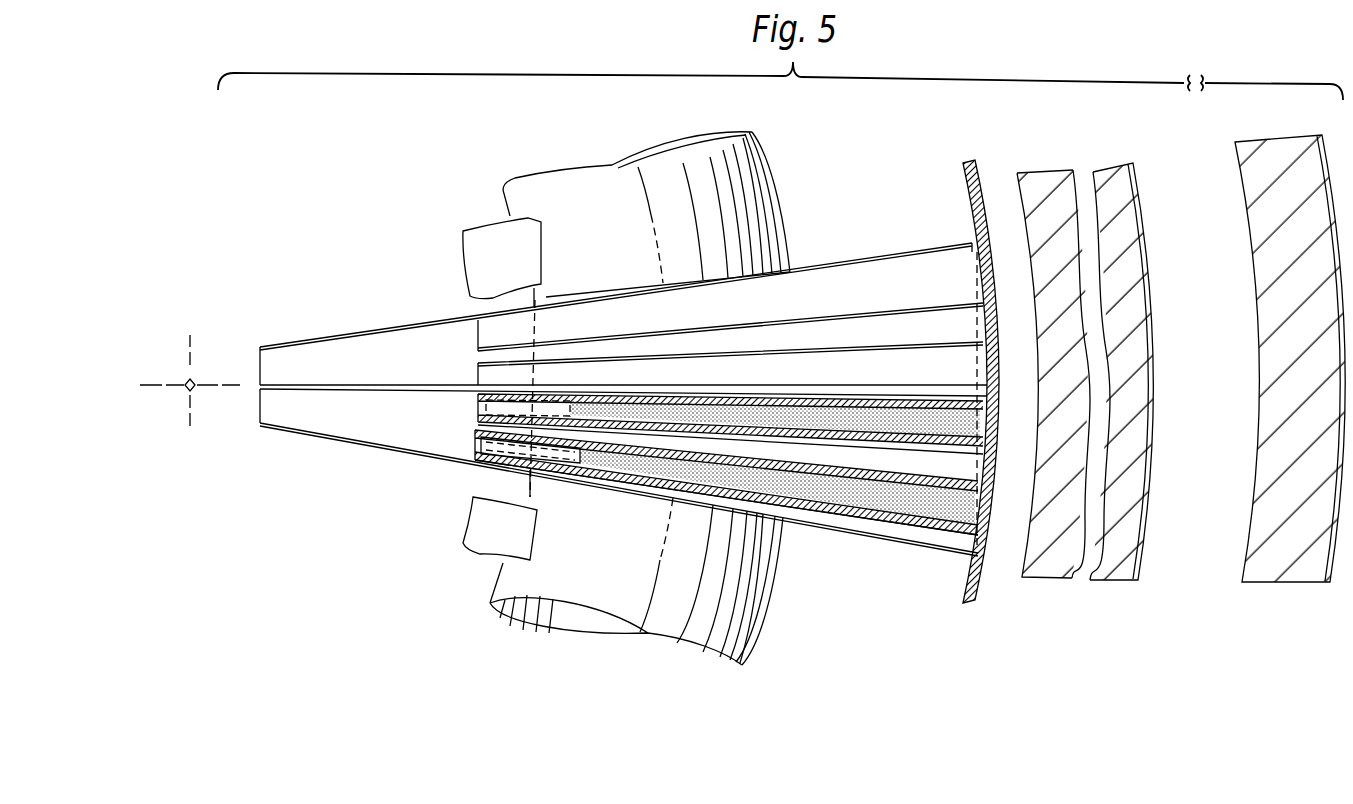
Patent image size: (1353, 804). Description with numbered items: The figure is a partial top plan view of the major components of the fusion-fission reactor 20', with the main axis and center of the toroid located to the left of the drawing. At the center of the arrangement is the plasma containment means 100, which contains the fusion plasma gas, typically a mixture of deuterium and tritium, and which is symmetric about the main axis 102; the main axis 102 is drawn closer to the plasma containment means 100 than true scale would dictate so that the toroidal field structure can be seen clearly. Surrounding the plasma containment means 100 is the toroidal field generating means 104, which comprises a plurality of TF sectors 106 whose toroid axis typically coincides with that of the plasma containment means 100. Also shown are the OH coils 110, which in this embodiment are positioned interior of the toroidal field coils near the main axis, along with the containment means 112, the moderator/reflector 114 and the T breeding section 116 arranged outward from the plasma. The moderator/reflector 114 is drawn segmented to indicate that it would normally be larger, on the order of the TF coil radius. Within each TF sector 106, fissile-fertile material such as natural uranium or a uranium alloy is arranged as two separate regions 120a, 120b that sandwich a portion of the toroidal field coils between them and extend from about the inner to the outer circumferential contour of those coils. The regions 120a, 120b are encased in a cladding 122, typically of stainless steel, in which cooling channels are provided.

The fusion-fission reactor 20' is at (307, 204).
The plasma containment means 100 is at (793, 153).
The main axis 102 is at (185, 383).
The toroidal field generating means 104 is at (872, 251).
The TF sector 106 is at (373, 332).
The OH coils 110 is at (478, 244).
The containment means 112 is at (976, 171).
The moderator/reflector 114 is at (1096, 180).
The T breeding section 116 is at (1260, 152).
The fissile-fertile material region 120a is at (970, 421).
The fissile-fertile material region 120b is at (906, 508).
The cladding 122 is at (808, 504).